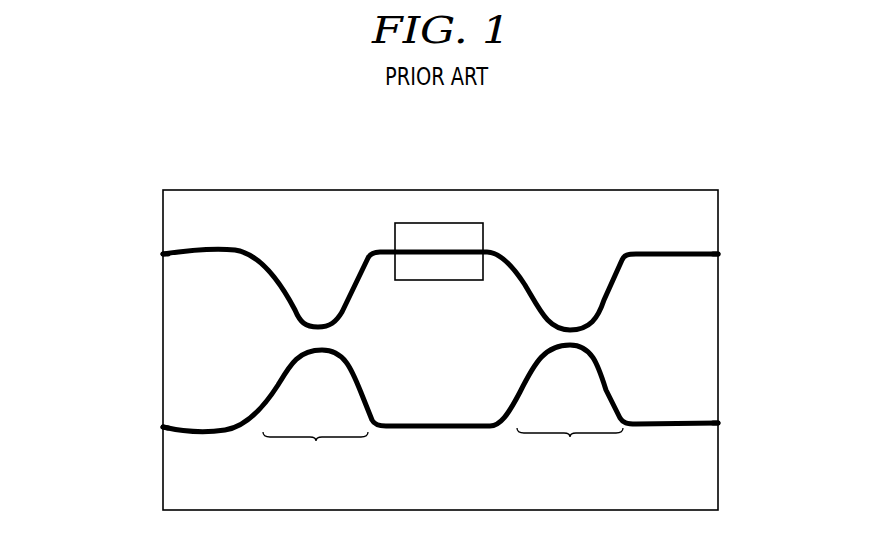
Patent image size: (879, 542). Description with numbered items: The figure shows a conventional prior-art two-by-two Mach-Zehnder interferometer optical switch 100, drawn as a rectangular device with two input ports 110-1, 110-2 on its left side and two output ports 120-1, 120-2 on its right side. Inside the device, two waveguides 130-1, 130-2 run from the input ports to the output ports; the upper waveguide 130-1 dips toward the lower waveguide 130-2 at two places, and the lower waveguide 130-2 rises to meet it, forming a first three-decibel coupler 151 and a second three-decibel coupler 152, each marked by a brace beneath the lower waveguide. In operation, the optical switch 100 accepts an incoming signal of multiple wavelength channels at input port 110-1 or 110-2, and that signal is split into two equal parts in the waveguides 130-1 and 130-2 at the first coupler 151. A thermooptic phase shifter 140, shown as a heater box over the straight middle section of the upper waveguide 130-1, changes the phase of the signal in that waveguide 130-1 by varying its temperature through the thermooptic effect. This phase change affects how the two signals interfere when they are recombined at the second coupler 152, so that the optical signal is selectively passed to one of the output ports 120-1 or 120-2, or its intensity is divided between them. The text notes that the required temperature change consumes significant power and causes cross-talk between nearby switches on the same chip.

The 2-by-2 MZI optical switch 100 is at (433, 190).
The input port 110-1 is at (165, 255).
The input port 110-2 is at (165, 427).
The output port 120-1 is at (718, 254).
The output port 120-2 is at (718, 423).
The waveguide 130-1 is at (277, 279).
The waveguide 130-2 is at (443, 429).
The thermooptic phase shifter 140 is at (483, 238).
The 3 dB coupler 151 is at (315, 454).
The 3 dB coupler 152 is at (570, 448).